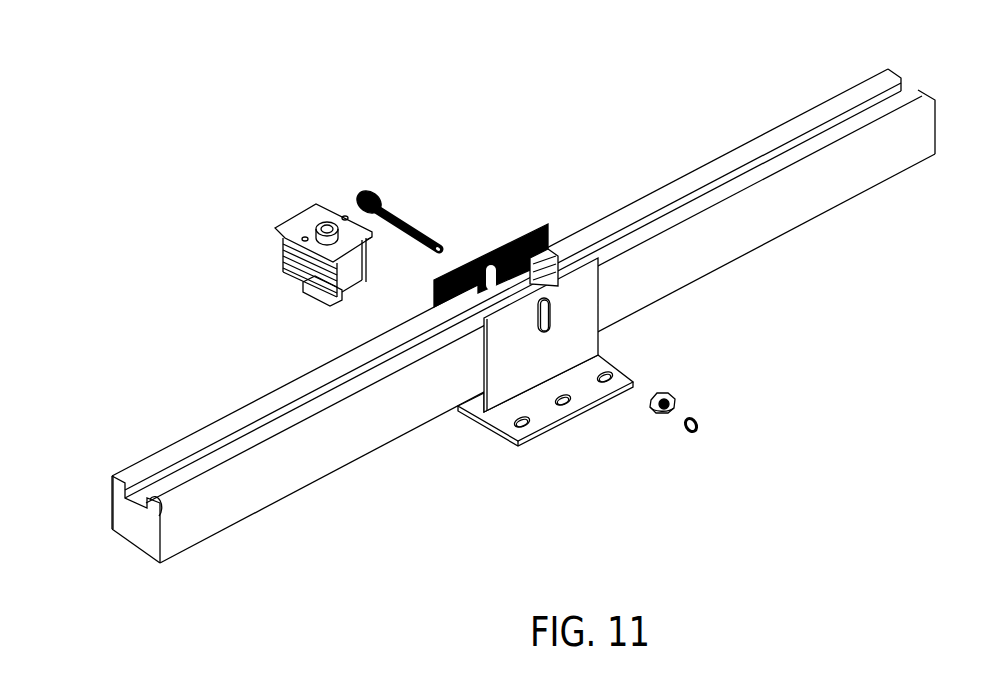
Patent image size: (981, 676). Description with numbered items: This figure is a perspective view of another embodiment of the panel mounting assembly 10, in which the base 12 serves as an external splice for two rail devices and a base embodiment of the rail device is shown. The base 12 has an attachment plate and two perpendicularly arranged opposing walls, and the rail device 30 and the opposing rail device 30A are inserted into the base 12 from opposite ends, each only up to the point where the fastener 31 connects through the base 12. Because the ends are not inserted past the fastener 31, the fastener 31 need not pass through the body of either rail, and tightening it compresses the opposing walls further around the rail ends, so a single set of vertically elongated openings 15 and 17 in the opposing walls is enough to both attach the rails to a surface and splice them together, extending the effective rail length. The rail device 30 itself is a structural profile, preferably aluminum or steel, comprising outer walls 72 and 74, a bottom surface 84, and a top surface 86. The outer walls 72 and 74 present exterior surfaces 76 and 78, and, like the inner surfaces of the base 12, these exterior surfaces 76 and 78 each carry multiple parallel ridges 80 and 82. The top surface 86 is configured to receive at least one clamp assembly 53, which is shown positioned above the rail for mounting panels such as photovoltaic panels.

The assembly 10 is at (440, 95).
The base 12 is at (503, 415).
The opening 15 is at (552, 310).
The opening 17 is at (490, 252).
The rail device 30 is at (752, 118).
The rail device 30A is at (143, 448).
The fastener 31 is at (360, 188).
The clamp assembly 53 is at (276, 207).
The outer wall 72 is at (193, 538).
The outer wall 74 is at (113, 500).
The exterior surface 76 is at (245, 512).
The exterior surface 78 is at (110, 517).
The parallel ridges 80 is at (330, 468).
The parallel ridges 82 is at (110, 528).
The bottom surface 84 is at (143, 553).
The top surface 86 is at (237, 422).